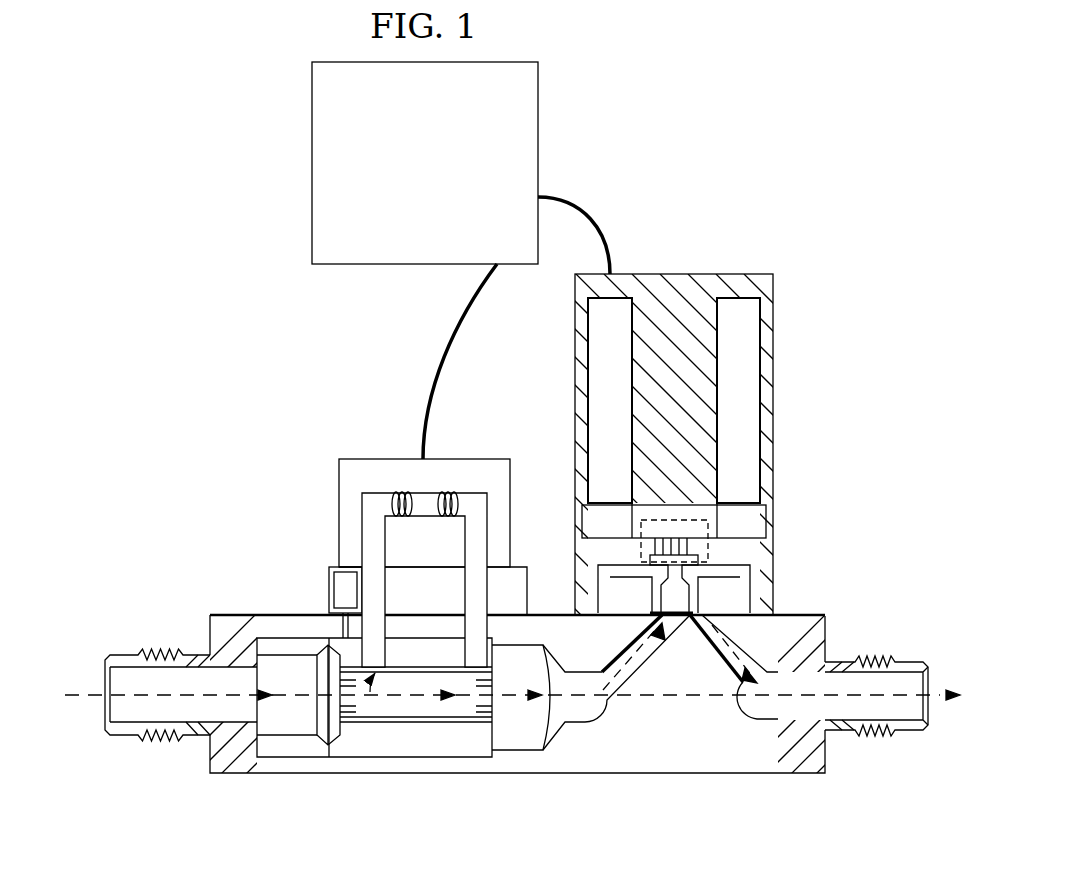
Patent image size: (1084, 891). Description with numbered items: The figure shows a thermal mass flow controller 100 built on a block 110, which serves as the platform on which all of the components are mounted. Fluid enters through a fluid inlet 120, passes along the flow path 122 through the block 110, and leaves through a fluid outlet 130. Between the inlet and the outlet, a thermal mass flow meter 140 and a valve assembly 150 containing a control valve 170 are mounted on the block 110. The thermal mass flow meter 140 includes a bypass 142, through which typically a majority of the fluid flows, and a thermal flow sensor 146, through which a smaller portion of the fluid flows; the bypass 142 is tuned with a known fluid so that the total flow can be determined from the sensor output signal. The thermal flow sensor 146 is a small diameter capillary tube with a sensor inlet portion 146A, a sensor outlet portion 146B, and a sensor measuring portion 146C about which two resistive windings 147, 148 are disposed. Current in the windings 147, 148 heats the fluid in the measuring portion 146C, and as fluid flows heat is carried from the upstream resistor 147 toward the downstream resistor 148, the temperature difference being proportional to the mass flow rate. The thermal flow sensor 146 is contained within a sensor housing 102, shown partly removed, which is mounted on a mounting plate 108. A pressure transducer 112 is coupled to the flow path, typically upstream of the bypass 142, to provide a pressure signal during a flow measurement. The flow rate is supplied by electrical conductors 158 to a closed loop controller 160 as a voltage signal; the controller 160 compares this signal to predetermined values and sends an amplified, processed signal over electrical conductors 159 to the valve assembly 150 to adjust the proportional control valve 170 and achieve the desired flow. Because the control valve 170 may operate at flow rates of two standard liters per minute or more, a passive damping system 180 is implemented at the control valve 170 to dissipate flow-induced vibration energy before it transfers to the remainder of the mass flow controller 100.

The mass flow controller 100 is at (790, 143).
The sensor housing 102 is at (339, 543).
The mounting plate 108 is at (330, 590).
The block 110 is at (696, 765).
The pressure transducer 112 is at (344, 582).
The fluid inlet 120 is at (125, 737).
The flow path 122 is at (75, 697).
The fluid outlet 130 is at (910, 735).
The thermal mass flow meter 140 is at (337, 476).
The bypass 142 is at (412, 725).
The thermal flow sensor 146 is at (492, 534).
The sensor inlet portion 146A is at (363, 522).
The sensor outlet portion 146B is at (488, 509).
The sensor measuring portion 146C is at (370, 491).
The upstream resistive winding 147 is at (400, 491).
The downstream resistive winding 148 is at (447, 490).
The valve assembly 150 is at (690, 274).
The electrical conductors 158 is at (437, 368).
The electrical conductors 159 is at (612, 199).
The controller 160 is at (443, 178).
The control valve 170 is at (700, 546).
The passive damping system 180 is at (712, 524).